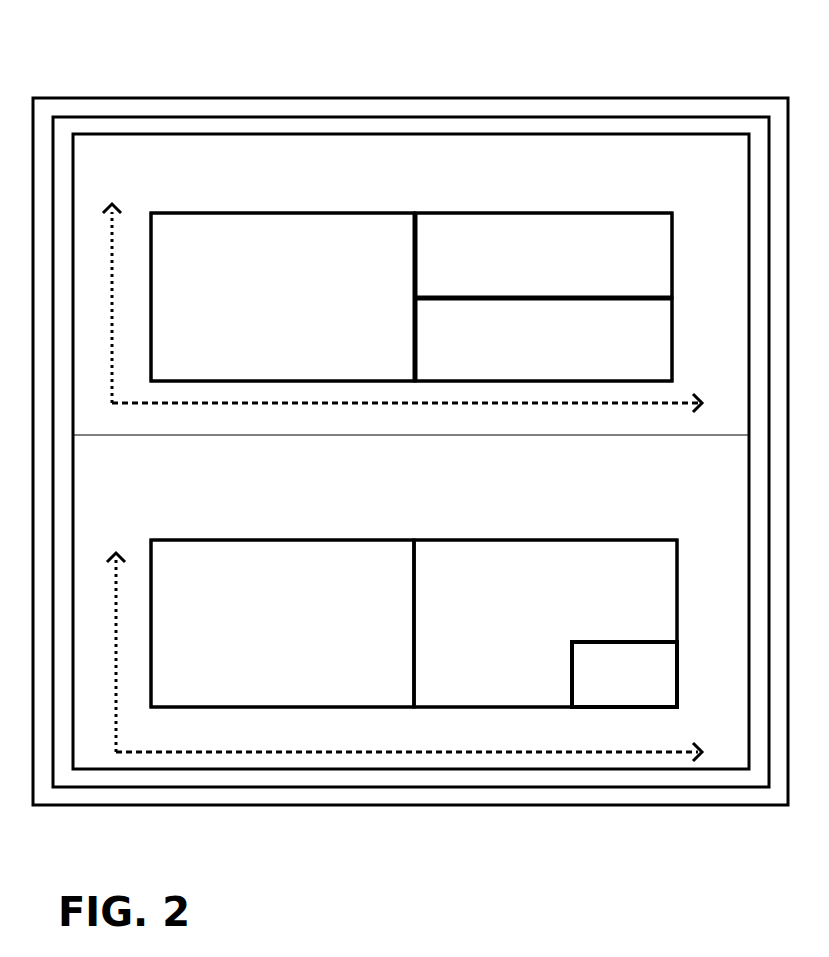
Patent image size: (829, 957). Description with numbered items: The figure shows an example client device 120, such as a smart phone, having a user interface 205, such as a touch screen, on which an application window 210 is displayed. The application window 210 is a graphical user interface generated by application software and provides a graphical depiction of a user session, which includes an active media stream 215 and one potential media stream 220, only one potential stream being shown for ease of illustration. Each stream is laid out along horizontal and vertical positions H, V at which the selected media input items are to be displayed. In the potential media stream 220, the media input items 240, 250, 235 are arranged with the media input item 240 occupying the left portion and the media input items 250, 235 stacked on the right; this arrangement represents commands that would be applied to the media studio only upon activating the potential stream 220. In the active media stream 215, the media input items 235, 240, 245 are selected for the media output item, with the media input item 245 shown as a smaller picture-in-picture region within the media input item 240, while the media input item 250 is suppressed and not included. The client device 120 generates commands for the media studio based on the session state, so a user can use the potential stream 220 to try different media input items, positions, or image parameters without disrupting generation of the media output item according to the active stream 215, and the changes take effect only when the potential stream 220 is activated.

The client device 120 is at (594, 98).
The user interface 205 is at (372, 117).
The application window 210 is at (120, 134).
The potential media stream 220 is at (417, 280).
The active media stream 215 is at (419, 612).
The media input item 240 is at (414, 460).
The media input item 250 is at (543, 255).
The media input item 235 is at (411, 502).
The media input item 245 is at (624, 674).